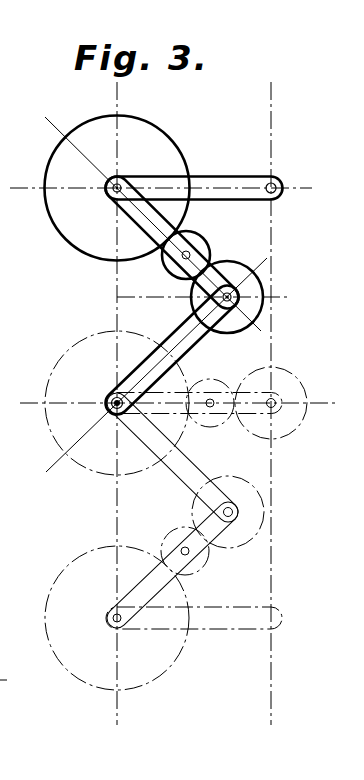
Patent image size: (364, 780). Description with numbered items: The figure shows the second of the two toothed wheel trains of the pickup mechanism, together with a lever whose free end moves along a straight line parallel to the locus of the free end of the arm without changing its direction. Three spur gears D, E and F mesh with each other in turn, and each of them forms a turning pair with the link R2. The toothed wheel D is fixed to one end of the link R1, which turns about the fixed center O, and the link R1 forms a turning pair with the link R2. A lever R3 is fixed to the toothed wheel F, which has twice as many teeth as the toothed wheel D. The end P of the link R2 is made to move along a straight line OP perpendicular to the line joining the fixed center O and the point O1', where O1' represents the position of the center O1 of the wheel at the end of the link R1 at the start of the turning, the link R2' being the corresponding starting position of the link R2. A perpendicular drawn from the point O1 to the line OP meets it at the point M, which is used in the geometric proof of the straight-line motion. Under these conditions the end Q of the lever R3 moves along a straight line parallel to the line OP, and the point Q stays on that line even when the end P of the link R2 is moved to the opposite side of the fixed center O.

The toothed wheel F is at (150, 142).
The end of link R2 P is at (113, 192).
The lever R3 is at (210, 182).
The end of lever R3 Q is at (276, 183).
The link R2 is at (172, 243).
The toothed wheel E is at (197, 243).
The toothed wheel D is at (253, 282).
The center of toothed wheel O1 is at (236, 326).
The intersection point M is at (194, 298).
The link R1 is at (178, 337).
The fixed center O is at (109, 399).
The link in starting position R2' is at (194, 424).
The starting position of center O1' is at (296, 428).